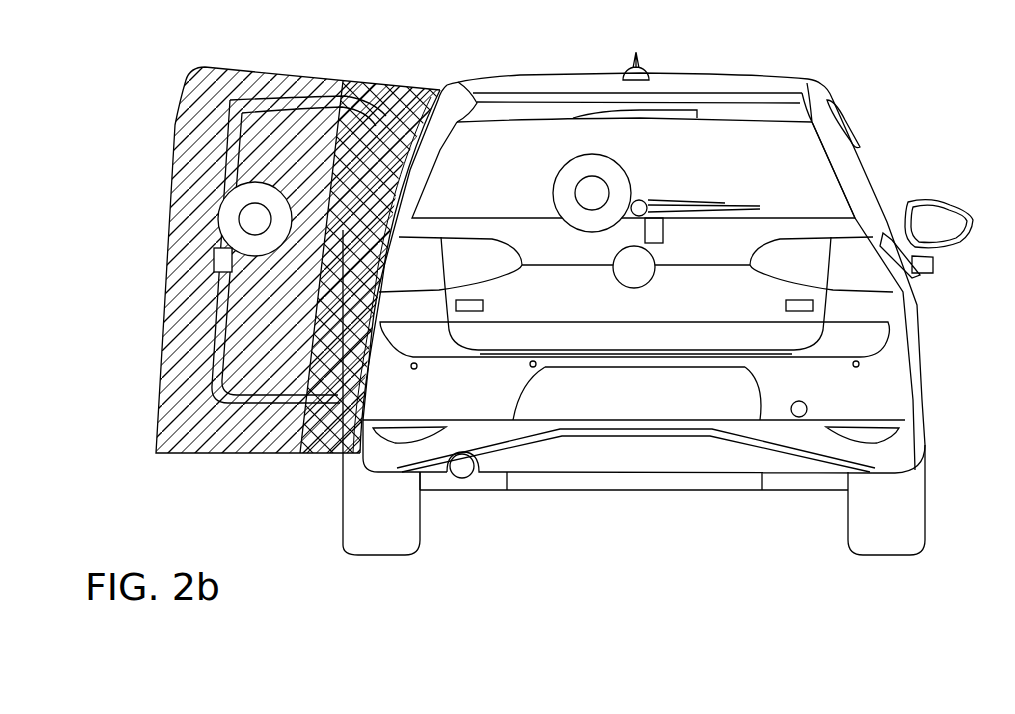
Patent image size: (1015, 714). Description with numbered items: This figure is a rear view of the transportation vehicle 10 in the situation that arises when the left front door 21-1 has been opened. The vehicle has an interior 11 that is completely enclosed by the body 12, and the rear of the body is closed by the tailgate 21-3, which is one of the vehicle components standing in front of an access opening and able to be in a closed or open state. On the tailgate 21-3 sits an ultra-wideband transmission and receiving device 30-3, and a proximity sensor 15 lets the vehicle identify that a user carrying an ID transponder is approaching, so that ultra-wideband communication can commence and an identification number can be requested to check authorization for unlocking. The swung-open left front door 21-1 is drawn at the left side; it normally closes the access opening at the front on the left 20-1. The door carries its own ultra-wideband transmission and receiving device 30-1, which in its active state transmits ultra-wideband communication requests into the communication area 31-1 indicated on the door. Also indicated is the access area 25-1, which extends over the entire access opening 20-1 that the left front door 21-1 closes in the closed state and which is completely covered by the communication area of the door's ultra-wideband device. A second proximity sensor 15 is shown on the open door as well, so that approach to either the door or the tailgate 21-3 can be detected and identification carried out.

The transportation vehicle 10 is at (677, 83).
The interior 11 is at (508, 140).
The body 12 is at (919, 306).
The proximity sensor 15 is at (223, 261).
The access opening at the front on the left 20-1 is at (380, 157).
The left front door 21-1 is at (232, 402).
The tailgate 21-3 is at (773, 333).
The access area 25-1 is at (317, 422).
The ultra-wideband transmission and receiving device 30-1 is at (267, 195).
The ultra-wideband transmission and receiving device 30-3 is at (592, 167).
The communication area 31-1 is at (162, 420).